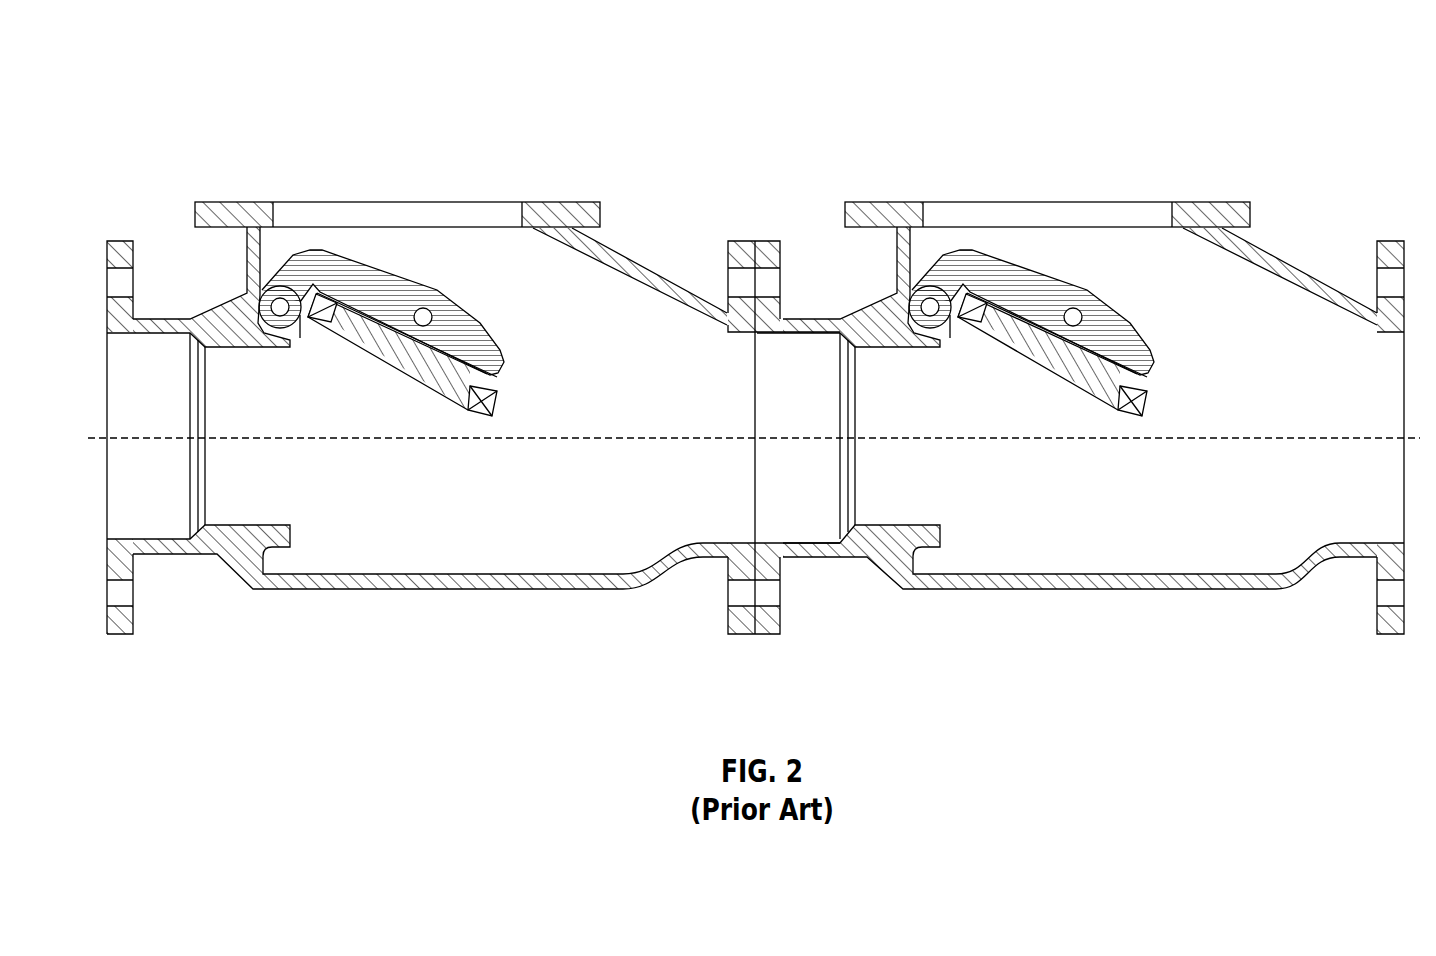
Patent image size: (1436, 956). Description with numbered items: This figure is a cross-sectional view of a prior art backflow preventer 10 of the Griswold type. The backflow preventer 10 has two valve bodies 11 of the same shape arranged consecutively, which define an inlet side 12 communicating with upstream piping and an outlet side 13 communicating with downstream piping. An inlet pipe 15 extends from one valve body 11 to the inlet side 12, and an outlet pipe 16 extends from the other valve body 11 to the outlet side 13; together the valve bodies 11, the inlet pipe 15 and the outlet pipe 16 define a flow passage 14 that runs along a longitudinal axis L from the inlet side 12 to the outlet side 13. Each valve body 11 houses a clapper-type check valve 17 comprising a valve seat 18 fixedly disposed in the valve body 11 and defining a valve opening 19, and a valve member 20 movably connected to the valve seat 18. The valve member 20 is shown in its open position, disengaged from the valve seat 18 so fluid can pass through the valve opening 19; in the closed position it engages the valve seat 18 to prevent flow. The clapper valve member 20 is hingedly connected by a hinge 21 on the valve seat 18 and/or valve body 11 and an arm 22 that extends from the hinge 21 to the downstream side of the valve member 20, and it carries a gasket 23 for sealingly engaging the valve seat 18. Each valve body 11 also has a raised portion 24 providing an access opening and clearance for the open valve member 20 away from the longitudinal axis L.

The backflow preventer 10 is at (368, 68).
The valve body 11 is at (560, 204).
The inlet side 12 is at (107, 300).
The outlet side 13 is at (1395, 256).
The flow passage 14 is at (565, 505).
The inlet pipe 15 is at (170, 556).
The outlet pipe 16 is at (1365, 552).
The check valve 17 is at (335, 283).
The valve seat 18 is at (228, 375).
The valve opening 19 is at (591, 569).
The valve member 20 is at (427, 378).
The hinge 21 is at (281, 305).
The arm 22 is at (395, 292).
The gasket 23 is at (497, 388).
The raised portion 24 is at (622, 268).
The longitudinal axis L is at (1404, 437).